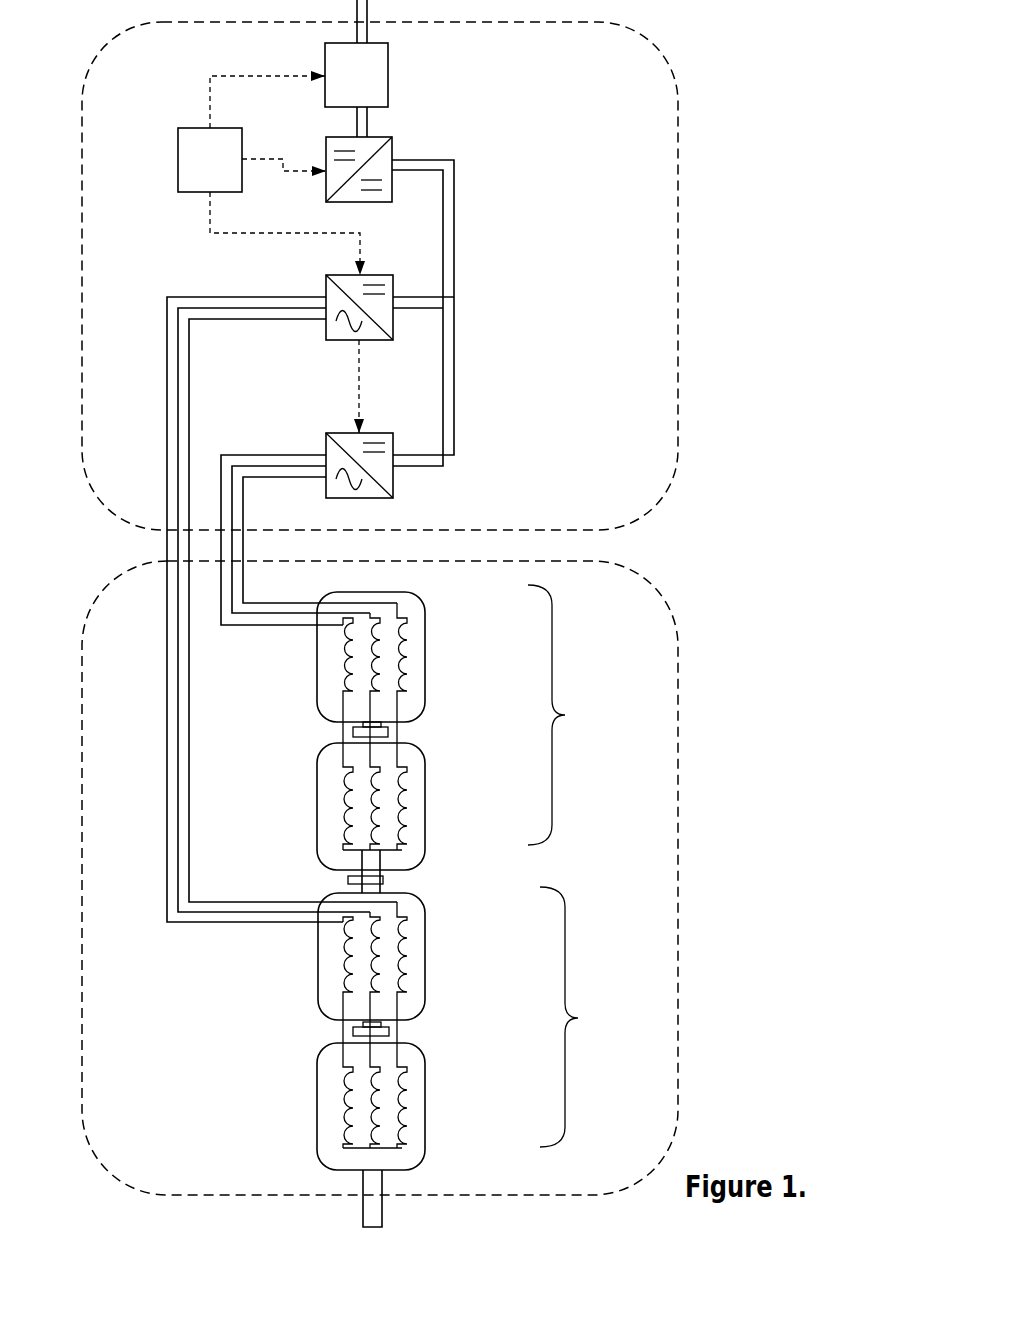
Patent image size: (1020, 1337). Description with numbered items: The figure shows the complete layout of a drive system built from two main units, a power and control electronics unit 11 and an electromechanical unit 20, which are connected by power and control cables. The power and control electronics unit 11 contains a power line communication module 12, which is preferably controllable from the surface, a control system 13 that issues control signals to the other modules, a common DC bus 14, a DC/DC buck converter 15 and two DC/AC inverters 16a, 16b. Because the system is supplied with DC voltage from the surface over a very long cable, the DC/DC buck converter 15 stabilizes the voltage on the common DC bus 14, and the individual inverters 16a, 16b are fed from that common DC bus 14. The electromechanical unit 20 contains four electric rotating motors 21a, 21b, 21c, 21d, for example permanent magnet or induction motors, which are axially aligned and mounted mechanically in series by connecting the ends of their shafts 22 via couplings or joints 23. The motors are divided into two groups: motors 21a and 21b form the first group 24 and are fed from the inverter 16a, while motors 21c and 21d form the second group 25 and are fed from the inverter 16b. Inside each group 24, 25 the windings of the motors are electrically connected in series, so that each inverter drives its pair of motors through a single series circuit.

The power and control electronics unit 11 is at (673, 78).
The power line communication module 12 is at (373, 85).
The control system 13 is at (198, 160).
The common DC bus 14 is at (459, 302).
The DC/DC buck converter 15 is at (383, 155).
The DC/AC inverter 16a is at (332, 293).
The DC/AC inverter 16b is at (340, 453).
The electromechanical unit 20 is at (679, 625).
The electric rotating motor 21a is at (428, 640).
The electric rotating motor 21b is at (432, 790).
The electric rotating motor 21c is at (430, 944).
The electric rotating motor 21d is at (432, 1098).
The shaft 22 is at (383, 877).
The coupling/joint 23 is at (388, 732).
The first group 24 is at (566, 715).
The second group 25 is at (577, 1017).